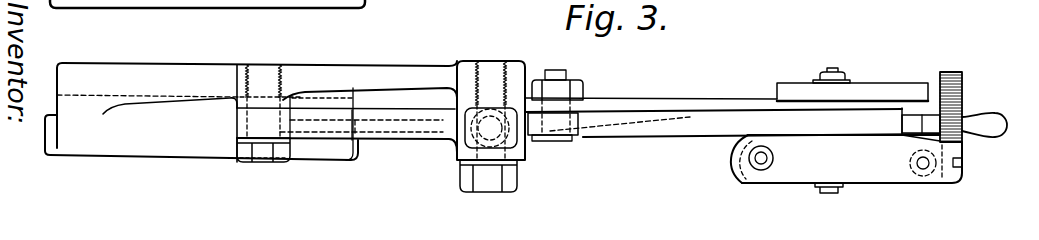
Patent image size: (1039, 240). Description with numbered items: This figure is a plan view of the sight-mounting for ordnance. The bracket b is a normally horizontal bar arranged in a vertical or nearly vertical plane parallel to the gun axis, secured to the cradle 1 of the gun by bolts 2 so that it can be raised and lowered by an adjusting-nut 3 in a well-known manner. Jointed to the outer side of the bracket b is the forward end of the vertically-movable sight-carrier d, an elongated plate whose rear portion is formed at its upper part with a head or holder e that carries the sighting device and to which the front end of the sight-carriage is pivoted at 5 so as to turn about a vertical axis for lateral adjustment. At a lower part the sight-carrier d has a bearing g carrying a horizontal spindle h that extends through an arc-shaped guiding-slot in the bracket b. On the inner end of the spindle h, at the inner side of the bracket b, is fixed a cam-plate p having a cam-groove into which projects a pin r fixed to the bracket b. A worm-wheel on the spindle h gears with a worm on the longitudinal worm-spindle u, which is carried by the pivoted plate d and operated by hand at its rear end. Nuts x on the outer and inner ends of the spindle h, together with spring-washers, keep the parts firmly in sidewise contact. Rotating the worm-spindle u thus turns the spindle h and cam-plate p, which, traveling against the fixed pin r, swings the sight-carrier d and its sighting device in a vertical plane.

The cradle 1 is at (251, 111).
The bolts 2 is at (268, 163).
The adjusting-nut 3 is at (480, 148).
The pivot 5 is at (762, 164).
The bracket b is at (662, 103).
The sight-carrier d is at (556, 141).
The head or holder e is at (852, 159).
The bearing g is at (733, 163).
The cam-plate p is at (794, 83).
The spindle h is at (826, 190).
The worm-spindle u is at (931, 123).
The pin r is at (962, 90).
The nuts x is at (845, 72).